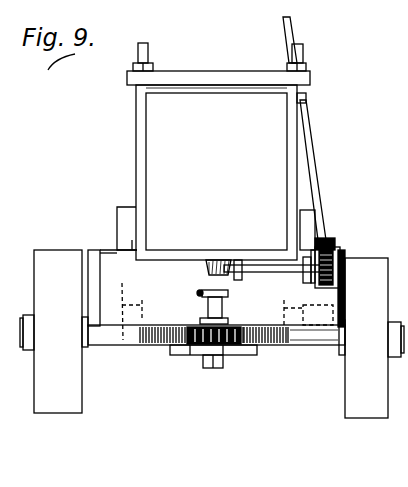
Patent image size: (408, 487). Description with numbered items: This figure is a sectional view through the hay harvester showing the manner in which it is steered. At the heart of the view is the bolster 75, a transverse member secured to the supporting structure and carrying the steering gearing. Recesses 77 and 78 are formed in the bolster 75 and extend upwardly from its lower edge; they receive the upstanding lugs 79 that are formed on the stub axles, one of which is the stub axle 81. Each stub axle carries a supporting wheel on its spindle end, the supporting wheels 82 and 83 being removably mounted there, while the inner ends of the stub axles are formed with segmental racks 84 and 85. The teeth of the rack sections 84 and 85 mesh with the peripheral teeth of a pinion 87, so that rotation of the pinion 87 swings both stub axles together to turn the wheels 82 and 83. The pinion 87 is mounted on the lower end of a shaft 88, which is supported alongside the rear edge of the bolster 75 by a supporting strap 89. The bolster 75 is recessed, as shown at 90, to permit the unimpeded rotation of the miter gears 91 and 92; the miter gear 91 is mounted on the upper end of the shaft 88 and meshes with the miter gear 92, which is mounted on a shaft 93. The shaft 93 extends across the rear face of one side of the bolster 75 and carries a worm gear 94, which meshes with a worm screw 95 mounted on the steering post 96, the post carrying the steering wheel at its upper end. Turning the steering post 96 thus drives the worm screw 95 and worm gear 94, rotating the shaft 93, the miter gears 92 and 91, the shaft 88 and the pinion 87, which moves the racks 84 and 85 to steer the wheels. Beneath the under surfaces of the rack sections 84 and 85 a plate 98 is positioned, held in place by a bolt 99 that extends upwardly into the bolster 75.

The bolster 75 is at (133, 307).
The recess 77 is at (124, 303).
The recess 78 is at (333, 308).
The upstanding lugs 79 is at (284, 308).
The stub axle 81 is at (315, 337).
The supporting wheel 82 is at (62, 400).
The supporting wheel 83 is at (368, 403).
The segmental rack 84 is at (157, 347).
The segmental rack 85 is at (266, 347).
The pinion 87 is at (216, 377).
The shaft 88 is at (128, 335).
The supporting strap 89 is at (200, 293).
The recess 90 is at (212, 260).
The miter gear 91 is at (226, 262).
The miter gear 92 is at (236, 265).
The shaft 93 is at (274, 272).
The worm gear 94 is at (340, 278).
The worm screw 95 is at (337, 255).
The steering post 96 is at (312, 165).
The plate 98 is at (188, 357).
The bolt 99 is at (207, 368).